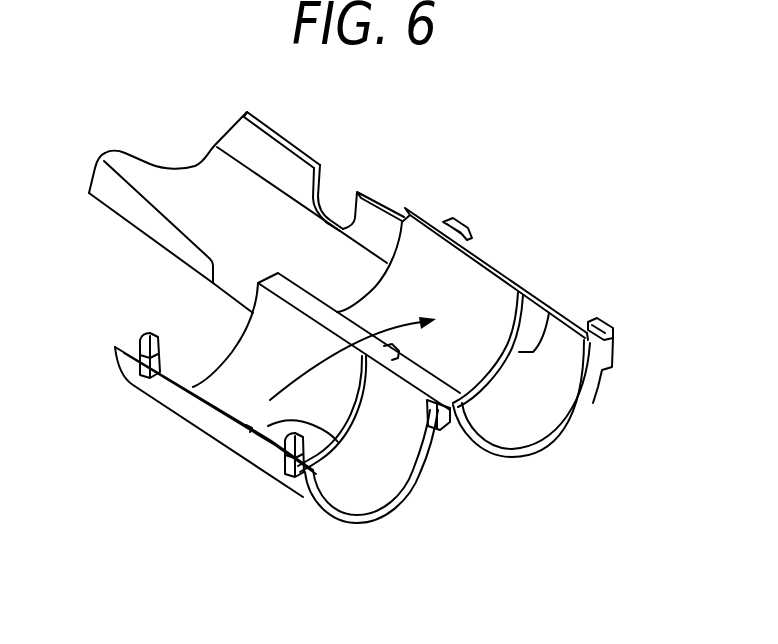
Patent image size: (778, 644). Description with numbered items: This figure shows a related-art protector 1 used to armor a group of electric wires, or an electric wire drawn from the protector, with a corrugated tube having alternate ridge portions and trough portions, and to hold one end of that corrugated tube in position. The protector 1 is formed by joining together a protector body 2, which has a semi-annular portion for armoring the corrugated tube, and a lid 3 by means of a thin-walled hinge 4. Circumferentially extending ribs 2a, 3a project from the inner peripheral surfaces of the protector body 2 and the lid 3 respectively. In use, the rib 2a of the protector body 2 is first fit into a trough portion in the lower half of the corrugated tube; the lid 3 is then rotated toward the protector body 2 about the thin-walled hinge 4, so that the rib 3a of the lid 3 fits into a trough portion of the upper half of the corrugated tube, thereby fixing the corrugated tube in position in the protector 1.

The protector 1 is at (361, 339).
The protector body 2 is at (525, 410).
The rib 2a is at (549, 313).
The lid 3 is at (357, 492).
The rib 3a is at (250, 430).
The thin-walled hinge 4 is at (452, 423).